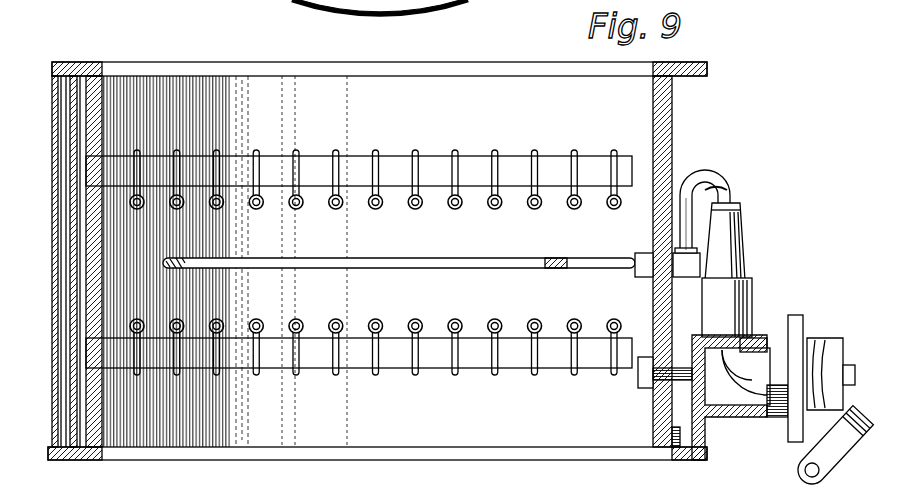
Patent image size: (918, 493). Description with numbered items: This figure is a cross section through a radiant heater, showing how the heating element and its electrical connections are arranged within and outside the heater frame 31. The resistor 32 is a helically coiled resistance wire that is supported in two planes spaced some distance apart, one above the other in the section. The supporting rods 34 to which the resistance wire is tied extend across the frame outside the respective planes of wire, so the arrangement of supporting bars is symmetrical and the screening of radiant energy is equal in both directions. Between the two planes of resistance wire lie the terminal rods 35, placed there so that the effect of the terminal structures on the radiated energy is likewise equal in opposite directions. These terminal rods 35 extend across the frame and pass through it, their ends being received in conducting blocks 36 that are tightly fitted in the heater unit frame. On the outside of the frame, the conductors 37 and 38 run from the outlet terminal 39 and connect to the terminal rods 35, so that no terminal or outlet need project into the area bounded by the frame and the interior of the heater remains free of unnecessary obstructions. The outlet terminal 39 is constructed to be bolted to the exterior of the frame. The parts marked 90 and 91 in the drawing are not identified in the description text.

The frame 31 is at (656, 110).
The resistor 32 is at (490, 210).
The supporting rods 34 is at (472, 165).
The terminal rods 35 is at (175, 255).
The conducting blocks 36 is at (690, 262).
The conductor 37 is at (698, 183).
The conductor 38 is at (725, 193).
The outlet terminal 39 is at (773, 350).
The valve knob 90 is at (833, 345).
The nozzle cone 91 is at (737, 232).